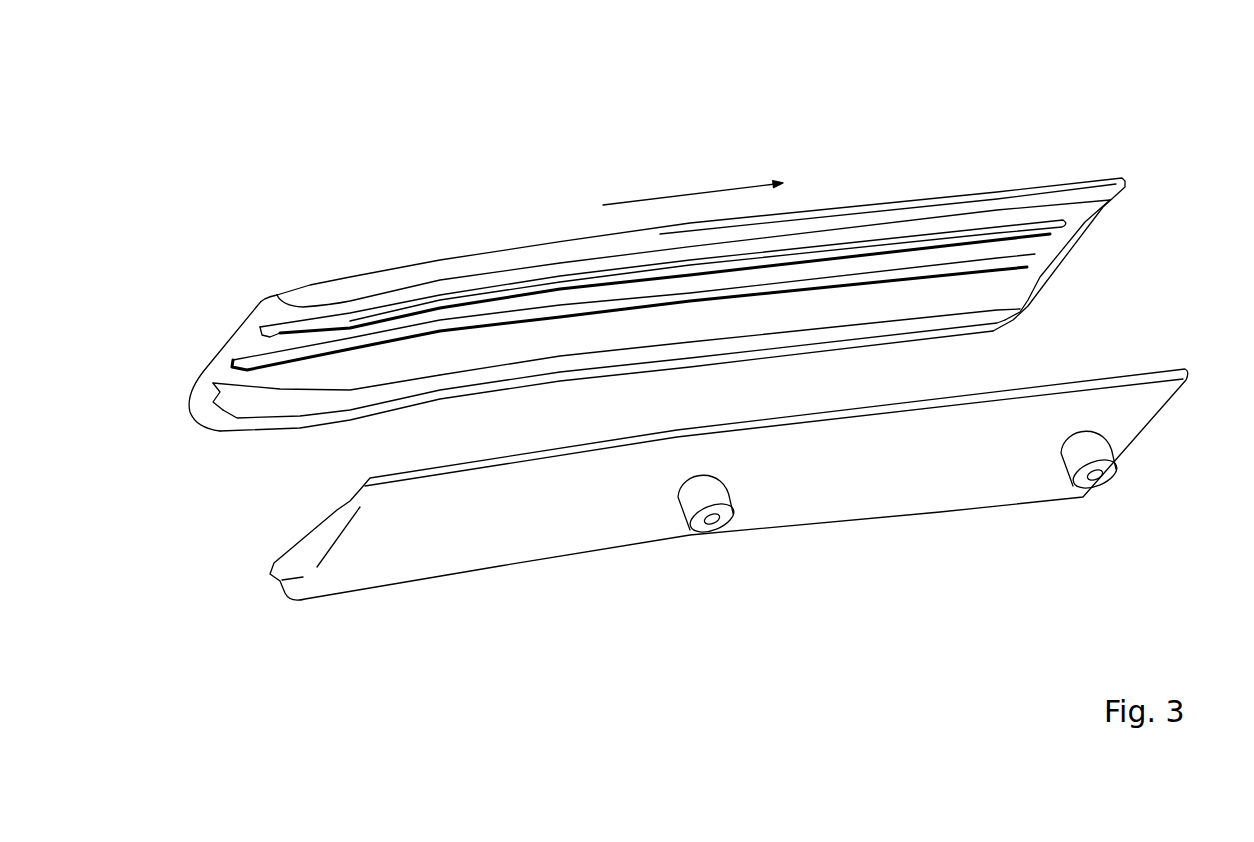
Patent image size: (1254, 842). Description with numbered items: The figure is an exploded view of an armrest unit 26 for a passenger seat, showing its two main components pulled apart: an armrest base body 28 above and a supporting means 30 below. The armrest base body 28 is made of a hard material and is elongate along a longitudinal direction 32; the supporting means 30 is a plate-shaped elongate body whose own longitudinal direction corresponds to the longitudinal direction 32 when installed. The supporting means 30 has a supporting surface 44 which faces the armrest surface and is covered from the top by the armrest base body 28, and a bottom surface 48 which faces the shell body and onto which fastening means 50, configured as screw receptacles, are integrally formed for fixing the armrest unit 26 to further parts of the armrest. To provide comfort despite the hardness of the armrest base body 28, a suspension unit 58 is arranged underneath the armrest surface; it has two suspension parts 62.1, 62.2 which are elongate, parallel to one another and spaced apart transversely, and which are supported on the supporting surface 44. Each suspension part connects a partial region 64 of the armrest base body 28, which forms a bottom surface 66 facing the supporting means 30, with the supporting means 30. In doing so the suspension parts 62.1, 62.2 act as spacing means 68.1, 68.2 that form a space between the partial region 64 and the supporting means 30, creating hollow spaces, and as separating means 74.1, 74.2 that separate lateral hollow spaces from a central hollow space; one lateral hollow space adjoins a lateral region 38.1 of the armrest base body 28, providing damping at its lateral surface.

The armrest unit 26 is at (749, 200).
The armrest base body 28 is at (693, 188).
The supporting means 30 is at (1141, 477).
The longitudinal direction 32 is at (693, 137).
The lateral region 38.1 is at (888, 151).
The supporting surface 44 is at (745, 435).
The bottom surface 48 is at (774, 538).
The fastening means 50 is at (695, 586).
The suspension unit 58 is at (616, 519).
The first suspension part 62.1 is at (665, 482).
The second suspension part 62.2 is at (629, 482).
The partial region 64 is at (297, 512).
The bottom surface 66 is at (522, 519).
The first spacing means 68.1 is at (663, 475).
The second spacing means 68.2 is at (614, 508).
The first separating means 74.1 is at (634, 475).
The second separating means 74.2 is at (606, 521).